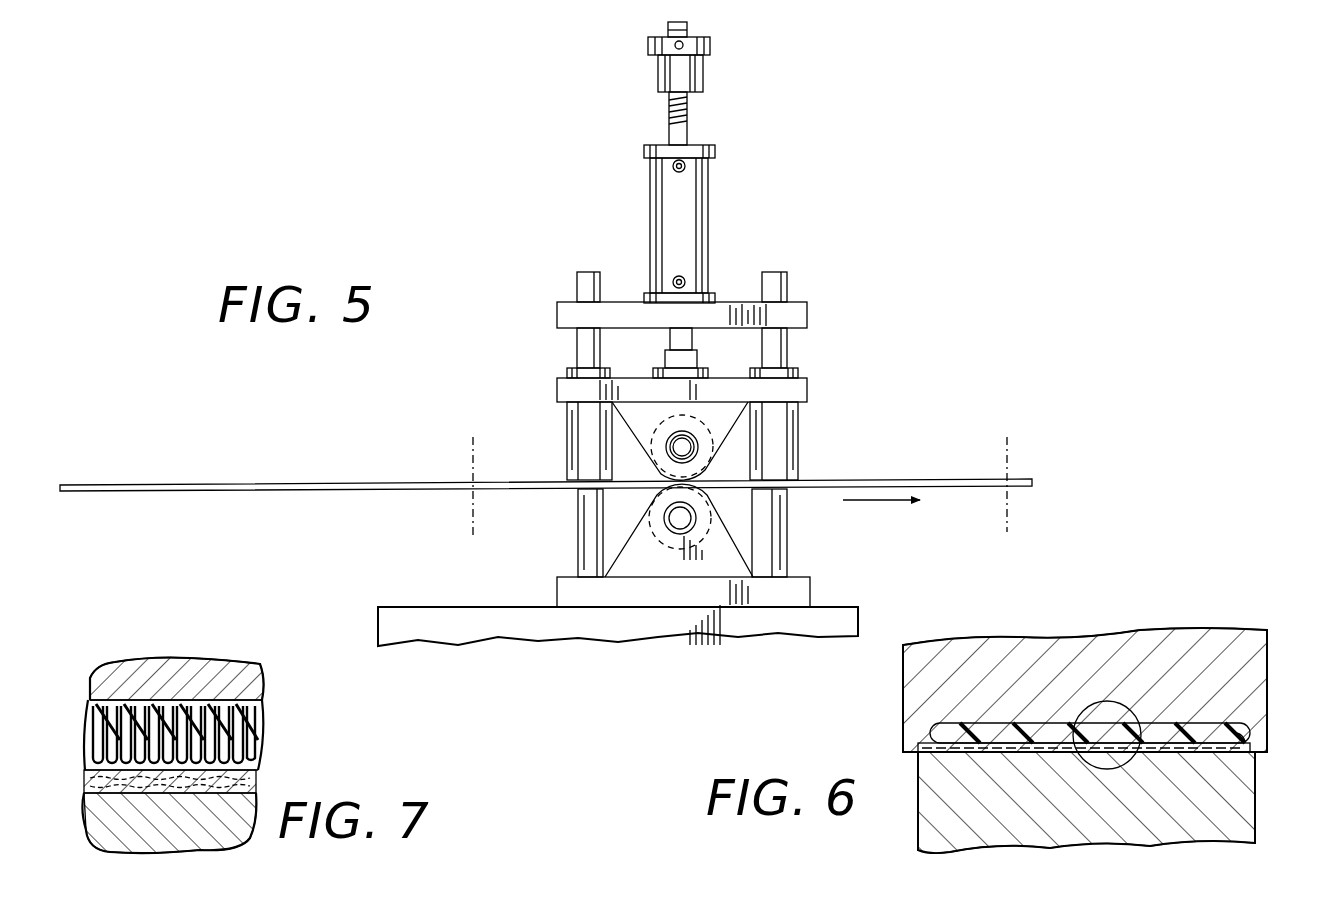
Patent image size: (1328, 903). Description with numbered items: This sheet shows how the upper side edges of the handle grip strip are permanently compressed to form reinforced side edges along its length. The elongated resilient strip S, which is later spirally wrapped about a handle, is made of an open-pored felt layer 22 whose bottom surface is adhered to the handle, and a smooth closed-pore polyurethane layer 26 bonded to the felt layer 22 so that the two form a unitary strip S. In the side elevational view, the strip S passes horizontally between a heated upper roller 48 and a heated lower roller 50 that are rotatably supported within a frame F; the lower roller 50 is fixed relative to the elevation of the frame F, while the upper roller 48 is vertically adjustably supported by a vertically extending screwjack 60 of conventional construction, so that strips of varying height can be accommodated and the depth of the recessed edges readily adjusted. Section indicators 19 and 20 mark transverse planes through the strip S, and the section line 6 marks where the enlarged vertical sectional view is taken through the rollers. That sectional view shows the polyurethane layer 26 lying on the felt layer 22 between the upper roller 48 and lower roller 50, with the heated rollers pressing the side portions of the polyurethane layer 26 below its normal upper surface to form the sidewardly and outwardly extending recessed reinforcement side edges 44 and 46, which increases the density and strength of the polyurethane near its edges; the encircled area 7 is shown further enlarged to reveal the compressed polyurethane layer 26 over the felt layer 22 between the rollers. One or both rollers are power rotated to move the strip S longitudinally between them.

In FIG. 5, the screwjack 60 is at (685, 205).
In FIG. 5, the frame F is at (790, 298).
In FIG. 5, the strip S is at (234, 483).
In FIG. 5, the upper roller 48 is at (707, 456).
In FIG. 7, the upper roller 48 is at (150, 668).
In FIG. 6, the upper roller 48 is at (1058, 645).
In FIG. 5, the lower roller 50 is at (718, 532).
In FIG. 7, the lower roller 50 is at (92, 819).
In FIG. 6, the lower roller 50 is at (920, 817).
In FIG. 7, the polyurethane layer 26 is at (263, 716).
In FIG. 6, the polyurethane layer 26 is at (968, 733).
In FIG. 7, the felt layer 22 is at (257, 778).
In FIG. 6, the felt layer 22 is at (922, 746).
In FIG. 6, the reinforcement side edge 44 is at (935, 735).
In FIG. 6, the reinforcement side edge 46 is at (1240, 732).
In FIG. 5, the section line 19 is at (470, 447).
In FIG. 5, the section line 20 is at (1004, 448).
In FIG. 5, the section line 6— 6 is at (673, 494).
In FIG. 6, the encircled area 7 is at (1124, 700).